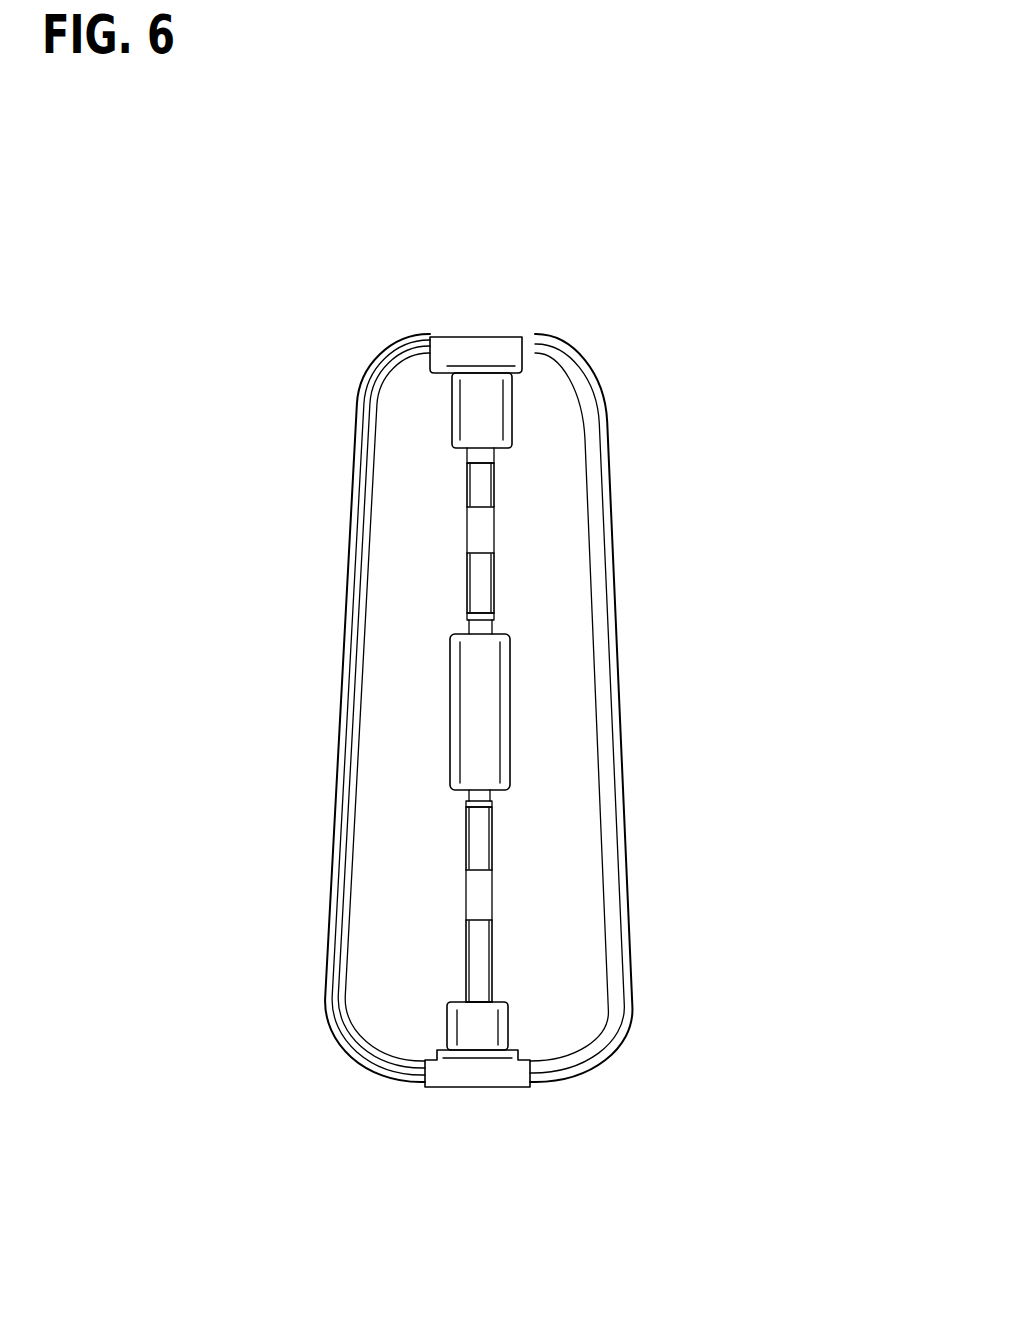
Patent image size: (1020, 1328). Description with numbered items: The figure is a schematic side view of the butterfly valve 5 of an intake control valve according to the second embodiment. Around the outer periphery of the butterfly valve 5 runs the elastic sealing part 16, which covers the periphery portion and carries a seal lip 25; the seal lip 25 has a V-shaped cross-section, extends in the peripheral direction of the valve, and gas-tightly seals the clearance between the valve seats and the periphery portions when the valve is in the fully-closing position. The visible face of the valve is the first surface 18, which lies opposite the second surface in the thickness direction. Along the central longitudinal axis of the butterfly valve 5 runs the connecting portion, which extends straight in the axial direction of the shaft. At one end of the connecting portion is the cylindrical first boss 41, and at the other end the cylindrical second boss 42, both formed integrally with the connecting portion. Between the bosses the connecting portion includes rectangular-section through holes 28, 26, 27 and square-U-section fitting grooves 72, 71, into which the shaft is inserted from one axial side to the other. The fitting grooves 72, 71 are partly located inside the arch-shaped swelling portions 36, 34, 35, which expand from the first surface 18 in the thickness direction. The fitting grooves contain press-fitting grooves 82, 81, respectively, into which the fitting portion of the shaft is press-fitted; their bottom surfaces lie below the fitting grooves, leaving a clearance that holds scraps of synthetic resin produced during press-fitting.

The butterfly valve 5 is at (348, 308).
The elastic sealing part 16 is at (337, 723).
The seal lip 25 is at (387, 707).
The first surface 18 is at (585, 780).
The second boss 42 is at (485, 352).
The swelling portion 36 is at (486, 414).
The through hole 28 is at (467, 452).
The press-fitting groove 82 is at (487, 490).
The fitting groove 72 is at (486, 528).
The through hole 26 is at (466, 634).
The swelling portion 34 is at (485, 710).
The press-fitting groove 81 is at (474, 846).
The fitting groove 71 is at (486, 900).
The through hole 27 is at (478, 998).
The swelling portion 35 is at (490, 1033).
The first boss 41 is at (470, 1073).